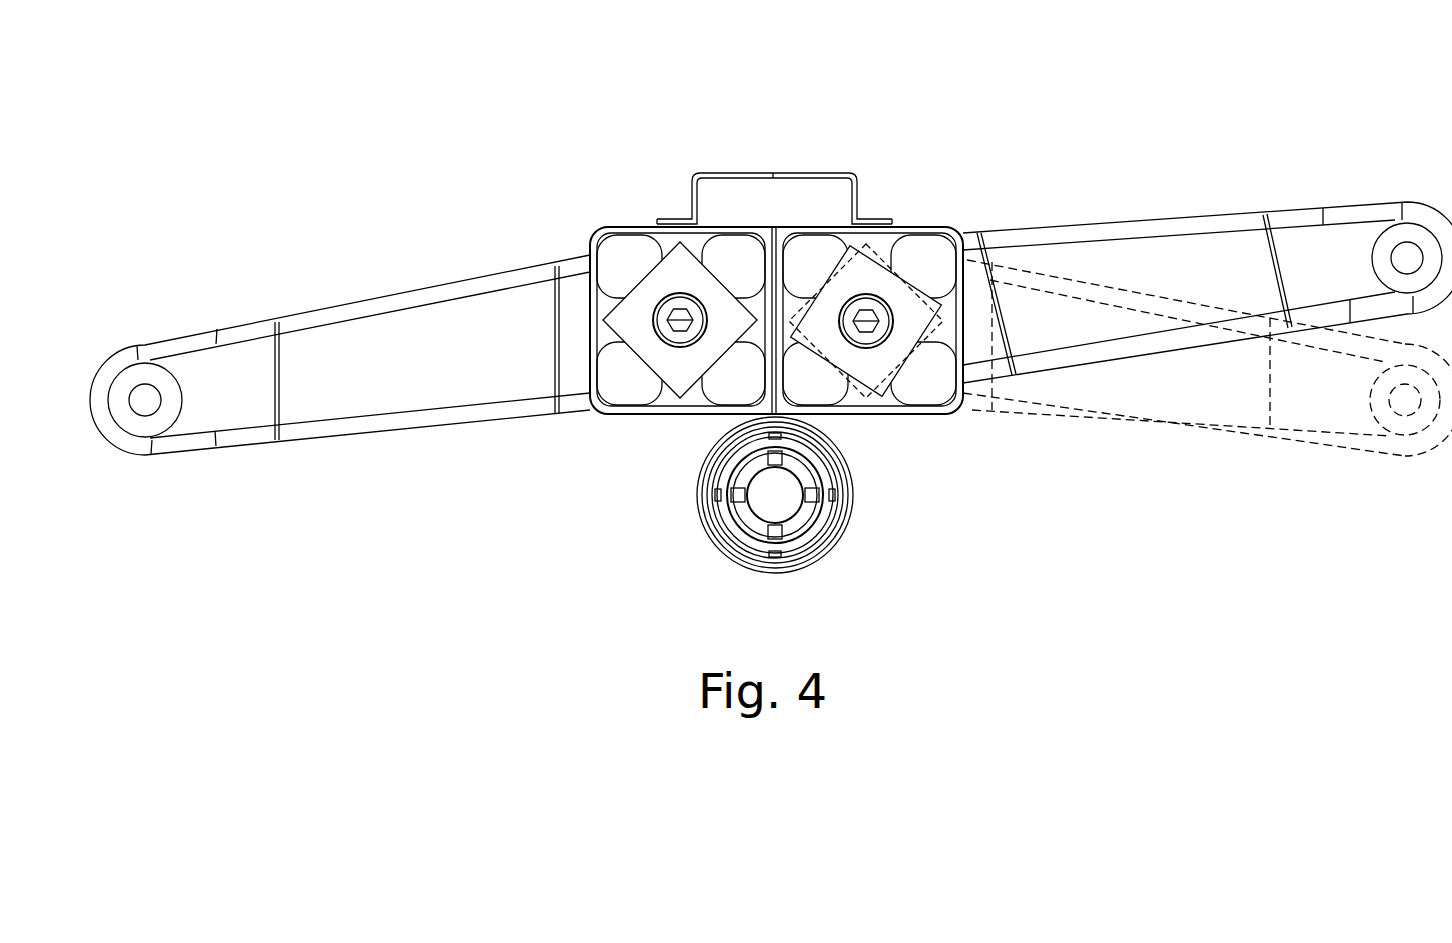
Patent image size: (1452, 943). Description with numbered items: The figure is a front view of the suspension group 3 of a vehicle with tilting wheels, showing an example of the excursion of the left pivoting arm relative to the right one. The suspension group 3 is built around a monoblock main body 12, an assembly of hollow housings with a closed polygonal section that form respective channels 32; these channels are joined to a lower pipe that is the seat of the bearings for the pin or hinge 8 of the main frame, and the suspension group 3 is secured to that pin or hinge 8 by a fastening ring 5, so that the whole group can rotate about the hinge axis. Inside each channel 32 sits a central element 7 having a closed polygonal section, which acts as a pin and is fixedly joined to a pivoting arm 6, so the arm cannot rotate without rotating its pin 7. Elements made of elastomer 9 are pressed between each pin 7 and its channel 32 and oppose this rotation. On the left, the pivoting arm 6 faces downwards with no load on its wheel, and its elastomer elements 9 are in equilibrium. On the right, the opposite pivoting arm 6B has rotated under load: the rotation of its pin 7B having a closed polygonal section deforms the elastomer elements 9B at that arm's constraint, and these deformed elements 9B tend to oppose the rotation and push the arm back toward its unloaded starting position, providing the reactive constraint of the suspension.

The suspension group 3 is at (878, 146).
The fastening ring 5 is at (760, 520).
The pivoting arm 6 is at (420, 336).
The opposite pivoting arm 6B is at (1192, 252).
The central element having a closed polygonal section 7 is at (678, 272).
The pin having a closed polygonal section 7B is at (898, 290).
The pin or hinge 8 is at (845, 530).
The element made of elastomer 9 is at (612, 262).
The element made of elastomer 9B is at (810, 250).
The monoblock main body 12 is at (778, 228).
The channel having a closed polygonal section 32 is at (625, 228).